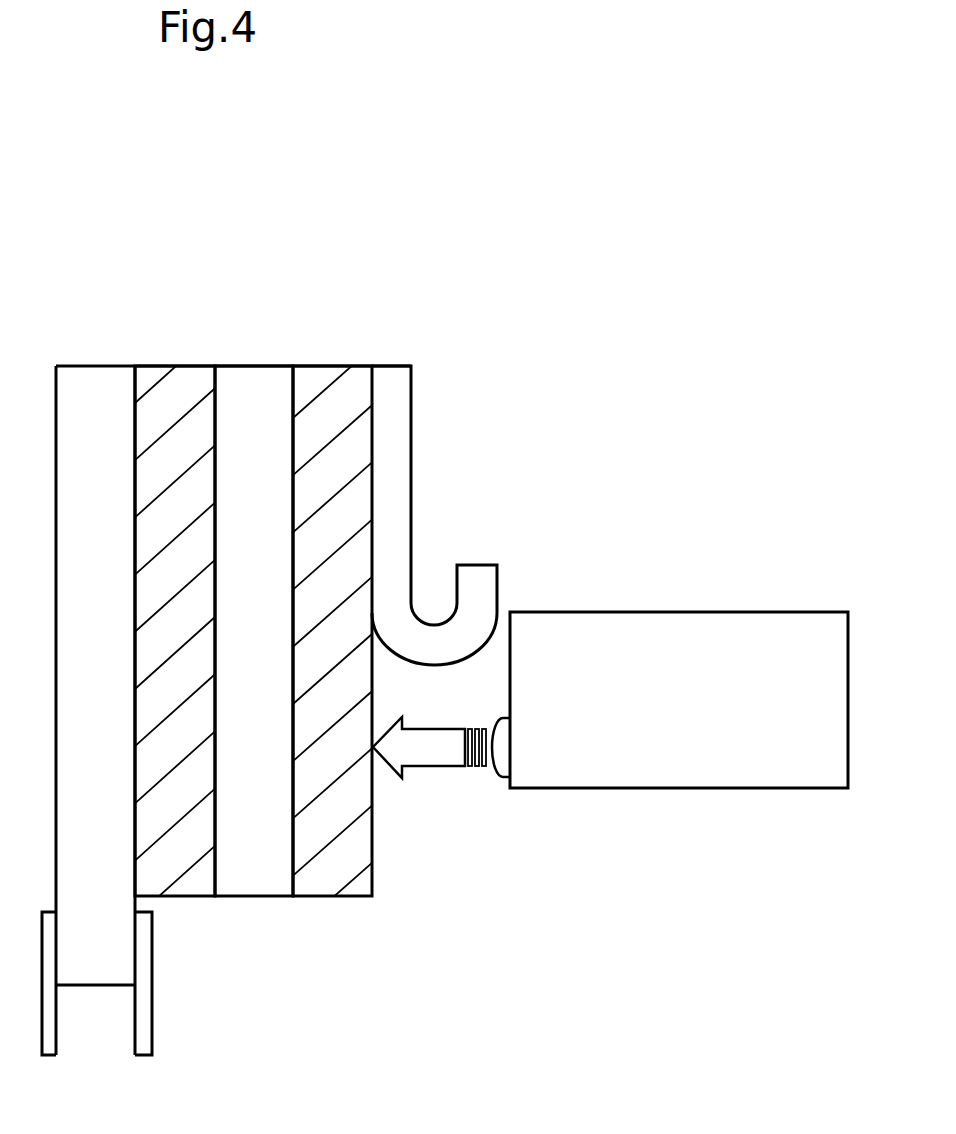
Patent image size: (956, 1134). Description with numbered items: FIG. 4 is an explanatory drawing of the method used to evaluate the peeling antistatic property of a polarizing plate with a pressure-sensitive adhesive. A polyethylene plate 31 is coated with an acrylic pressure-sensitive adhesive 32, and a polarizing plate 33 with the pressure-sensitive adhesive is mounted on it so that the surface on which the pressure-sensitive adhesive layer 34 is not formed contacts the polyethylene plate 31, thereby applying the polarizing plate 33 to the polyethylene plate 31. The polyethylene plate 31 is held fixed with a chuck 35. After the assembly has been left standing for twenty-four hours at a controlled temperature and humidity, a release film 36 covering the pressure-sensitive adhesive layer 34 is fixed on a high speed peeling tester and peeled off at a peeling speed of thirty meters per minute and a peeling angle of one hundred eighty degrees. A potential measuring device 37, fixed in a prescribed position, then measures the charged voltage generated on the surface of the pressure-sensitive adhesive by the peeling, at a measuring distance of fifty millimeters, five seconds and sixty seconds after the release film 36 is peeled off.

The polyethylene plate 31 is at (90, 395).
The acrylic pressure-sensitive adhesive 32 is at (170, 395).
The polarizing plate with the pressure-sensitive adhesive 33 is at (249, 395).
The pressure-sensitive adhesive layer 34 is at (329, 395).
The chuck 35 is at (146, 994).
The release film 36 is at (391, 392).
The potential measuring device 37 is at (629, 634).